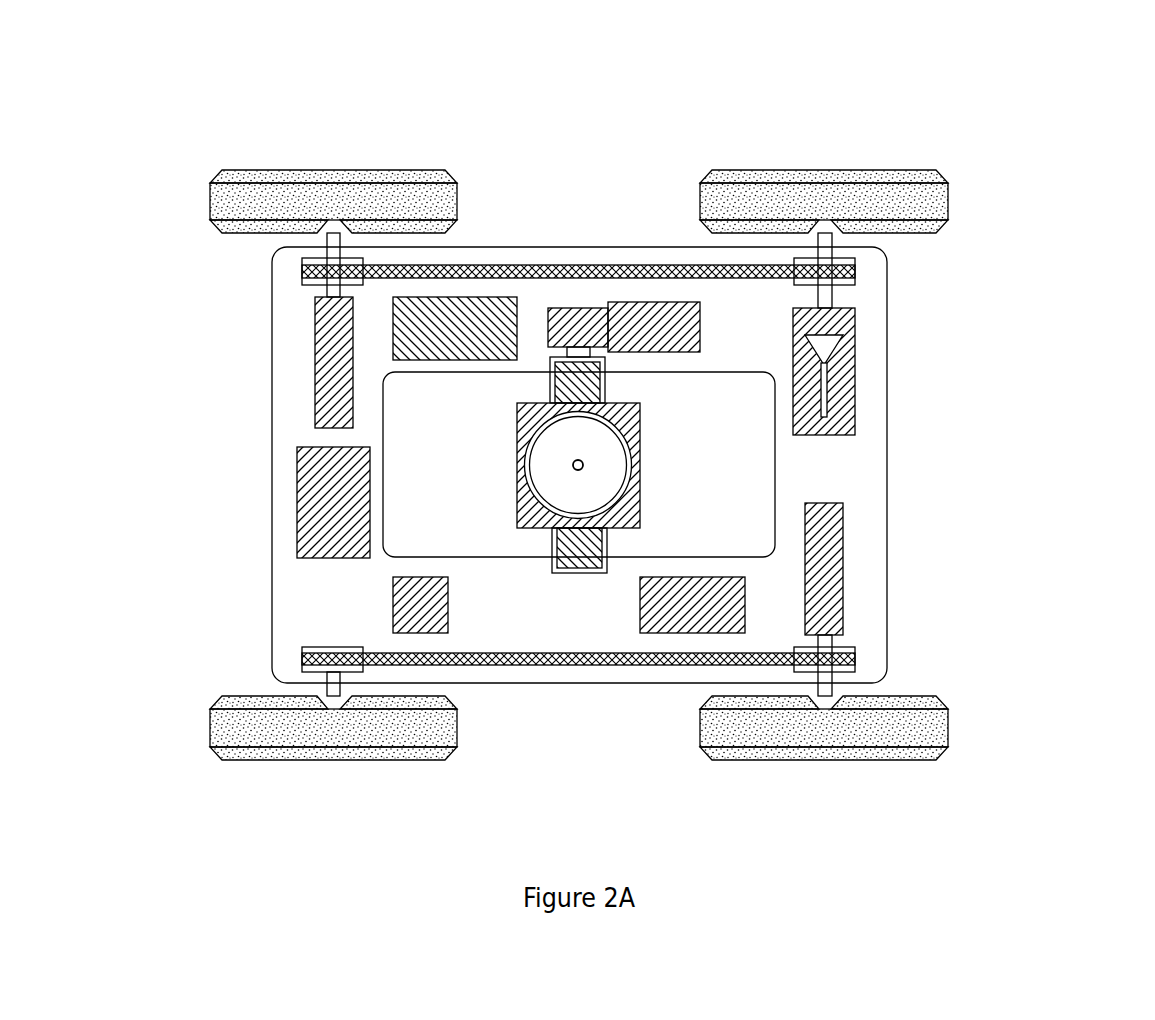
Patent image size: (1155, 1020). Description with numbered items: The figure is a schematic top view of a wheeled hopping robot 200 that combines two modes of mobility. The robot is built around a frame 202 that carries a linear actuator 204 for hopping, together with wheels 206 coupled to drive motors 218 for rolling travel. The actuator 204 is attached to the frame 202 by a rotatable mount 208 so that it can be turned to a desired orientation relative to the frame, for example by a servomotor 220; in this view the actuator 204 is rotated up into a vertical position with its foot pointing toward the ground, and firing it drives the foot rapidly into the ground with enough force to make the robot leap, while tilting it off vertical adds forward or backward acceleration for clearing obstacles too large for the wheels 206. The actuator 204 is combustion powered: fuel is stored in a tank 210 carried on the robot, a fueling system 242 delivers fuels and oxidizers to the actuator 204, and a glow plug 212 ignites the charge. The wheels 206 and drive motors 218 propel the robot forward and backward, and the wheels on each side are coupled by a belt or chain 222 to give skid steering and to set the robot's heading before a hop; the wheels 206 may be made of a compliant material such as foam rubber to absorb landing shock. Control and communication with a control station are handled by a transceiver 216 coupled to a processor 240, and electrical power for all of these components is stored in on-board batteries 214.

The wheeled hopping robot 200 is at (1005, 62).
The frame 202 is at (528, 614).
The linear actuator 204 is at (610, 443).
The wheels 206 is at (288, 198).
The rotatable mount 208 is at (583, 553).
The tank 210 is at (325, 513).
The glow plug 212 is at (573, 465).
The batteries 214 is at (452, 327).
The transceiver 216 is at (842, 408).
The drive motors 218 is at (332, 407).
The servomotor 220 is at (583, 323).
The belt or chain 222 is at (552, 657).
The processor 240 is at (690, 605).
The fueling system 242 is at (410, 604).